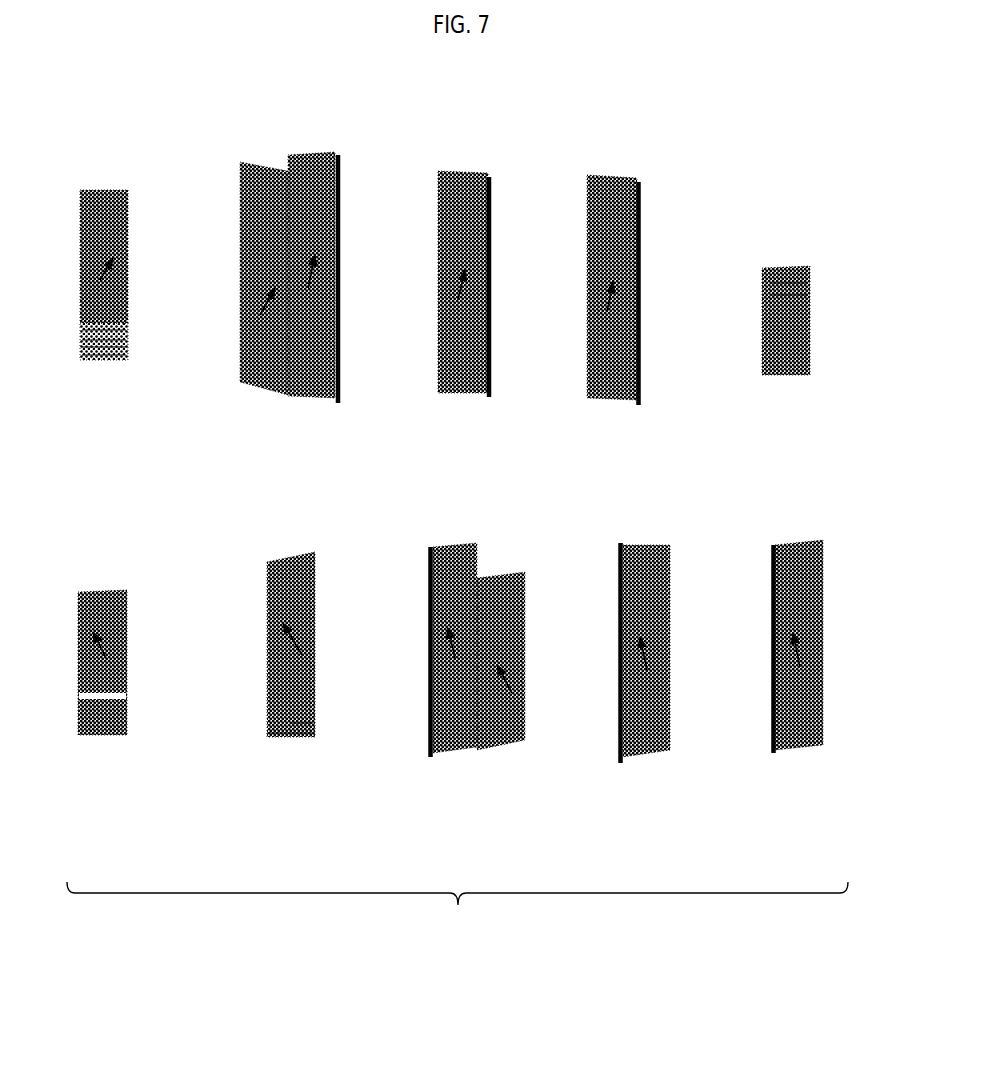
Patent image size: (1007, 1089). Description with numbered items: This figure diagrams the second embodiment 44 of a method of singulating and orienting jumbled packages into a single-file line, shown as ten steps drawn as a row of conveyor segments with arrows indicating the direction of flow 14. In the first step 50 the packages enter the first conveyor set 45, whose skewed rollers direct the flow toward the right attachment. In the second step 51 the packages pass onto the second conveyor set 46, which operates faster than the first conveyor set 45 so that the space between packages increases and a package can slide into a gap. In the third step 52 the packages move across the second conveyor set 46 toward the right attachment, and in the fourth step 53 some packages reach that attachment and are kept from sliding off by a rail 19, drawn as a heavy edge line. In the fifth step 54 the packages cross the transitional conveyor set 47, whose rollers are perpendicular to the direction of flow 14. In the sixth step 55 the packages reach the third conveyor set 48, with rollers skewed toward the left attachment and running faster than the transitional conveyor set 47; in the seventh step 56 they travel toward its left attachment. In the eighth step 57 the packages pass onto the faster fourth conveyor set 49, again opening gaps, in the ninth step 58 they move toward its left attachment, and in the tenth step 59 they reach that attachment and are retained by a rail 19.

The direction of flow 14 is at (108, 375).
The rail 19 is at (336, 403).
The second embodiment 44 is at (457, 909).
The first conveyor set 45 is at (74, 190).
The second conveyor set 46 is at (339, 156).
The transitional conveyor set 47 is at (816, 268).
The third conveyor set 48 is at (132, 592).
The fourth conveyor set 49 is at (424, 552).
The first step 50 is at (97, 77).
The second step 51 is at (285, 80).
The third step 52 is at (461, 80).
The fourth step 53 is at (609, 78).
The fifth step 54 is at (778, 77).
The sixth step 55 is at (100, 803).
The seventh step 56 is at (286, 803).
The eighth step 57 is at (479, 802).
The ninth step 58 is at (644, 802).
The tenth step 59 is at (794, 802).